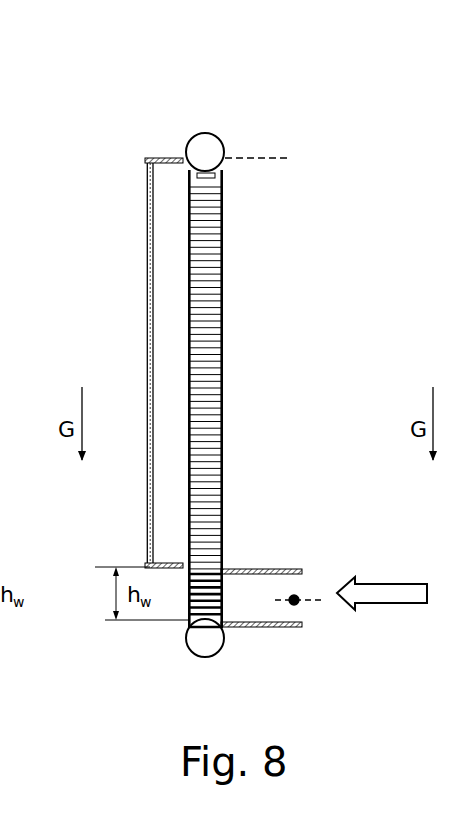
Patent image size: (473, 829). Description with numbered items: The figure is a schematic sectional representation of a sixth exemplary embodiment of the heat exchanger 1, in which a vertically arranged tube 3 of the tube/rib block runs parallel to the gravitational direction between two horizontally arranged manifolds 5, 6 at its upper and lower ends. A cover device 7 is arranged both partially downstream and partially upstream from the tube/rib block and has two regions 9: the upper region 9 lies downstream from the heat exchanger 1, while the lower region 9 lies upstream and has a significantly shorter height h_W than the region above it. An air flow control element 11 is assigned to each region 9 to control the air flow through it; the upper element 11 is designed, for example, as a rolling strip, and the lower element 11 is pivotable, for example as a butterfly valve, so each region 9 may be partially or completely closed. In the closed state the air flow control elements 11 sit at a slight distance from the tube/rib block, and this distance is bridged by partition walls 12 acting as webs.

The heat exchanger 1 is at (274, 104).
The tube 3 is at (207, 350).
The manifold 5 is at (207, 140).
The manifold 6 is at (206, 643).
The cover device 7 is at (151, 150).
The region 9 is at (233, 225).
The air flow control element 11 is at (147, 283).
The partition wall 12 is at (172, 158).